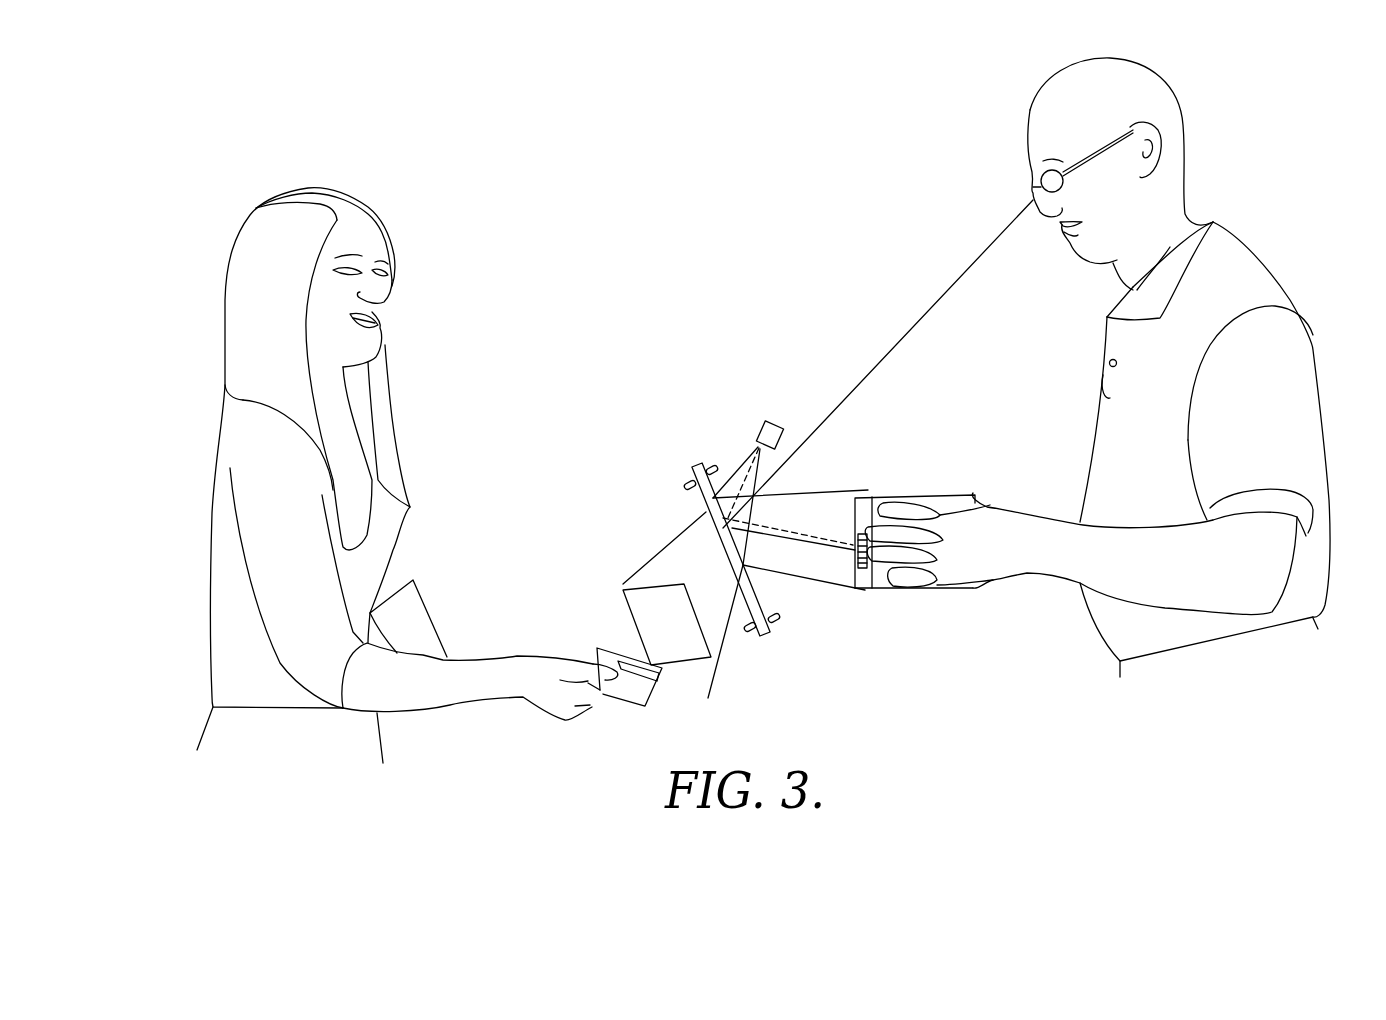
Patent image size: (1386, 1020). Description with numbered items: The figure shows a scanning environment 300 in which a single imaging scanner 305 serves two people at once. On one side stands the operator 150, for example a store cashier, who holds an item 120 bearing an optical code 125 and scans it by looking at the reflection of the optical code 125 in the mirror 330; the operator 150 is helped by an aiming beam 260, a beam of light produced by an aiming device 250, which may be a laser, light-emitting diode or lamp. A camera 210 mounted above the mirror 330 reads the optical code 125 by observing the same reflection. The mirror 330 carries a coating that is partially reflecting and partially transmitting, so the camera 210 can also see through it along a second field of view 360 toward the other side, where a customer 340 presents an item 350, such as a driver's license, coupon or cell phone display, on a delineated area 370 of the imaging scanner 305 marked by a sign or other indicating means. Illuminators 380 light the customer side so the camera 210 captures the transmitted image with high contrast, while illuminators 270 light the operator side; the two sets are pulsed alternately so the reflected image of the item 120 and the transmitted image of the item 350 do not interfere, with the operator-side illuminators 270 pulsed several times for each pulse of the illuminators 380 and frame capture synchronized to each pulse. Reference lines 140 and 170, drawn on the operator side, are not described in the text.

The scanning environment 300 is at (571, 78).
The imaging scanner 305 is at (566, 742).
The customer 340 is at (384, 414).
The item 350 is at (630, 703).
The delineated area 370 is at (683, 590).
The mirror 330 is at (770, 638).
The illuminators 380 is at (689, 481).
The illuminators 270 is at (706, 466).
The camera 210 is at (793, 405).
The aiming device 250 is at (758, 446).
The aiming beam 260 is at (797, 533).
The line of sight 140 is at (918, 323).
The second field of view 360 is at (641, 566).
The merchant field of view 170 is at (807, 492).
The item 120 is at (965, 494).
The optical code 125 is at (862, 580).
The operator 150 is at (1312, 306).